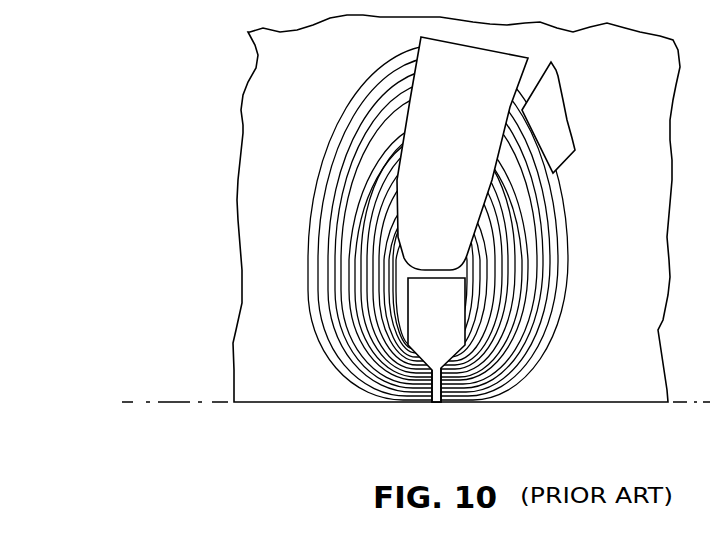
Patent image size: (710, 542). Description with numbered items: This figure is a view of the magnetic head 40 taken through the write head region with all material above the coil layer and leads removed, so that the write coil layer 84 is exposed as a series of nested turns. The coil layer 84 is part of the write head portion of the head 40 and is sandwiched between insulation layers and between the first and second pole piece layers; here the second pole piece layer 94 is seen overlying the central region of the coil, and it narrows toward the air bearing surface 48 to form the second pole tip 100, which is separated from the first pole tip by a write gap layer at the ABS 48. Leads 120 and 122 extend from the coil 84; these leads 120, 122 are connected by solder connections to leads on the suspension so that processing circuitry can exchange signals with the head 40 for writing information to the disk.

The magnetic head 40 is at (456, 237).
The air bearing surface (ABS) 48 is at (175, 402).
The write coil layer 84 is at (542, 299).
The second pole piece layer 94 is at (421, 328).
The second pole tip 100 is at (433, 403).
The lead 120 is at (427, 152).
The lead 122 is at (560, 110).